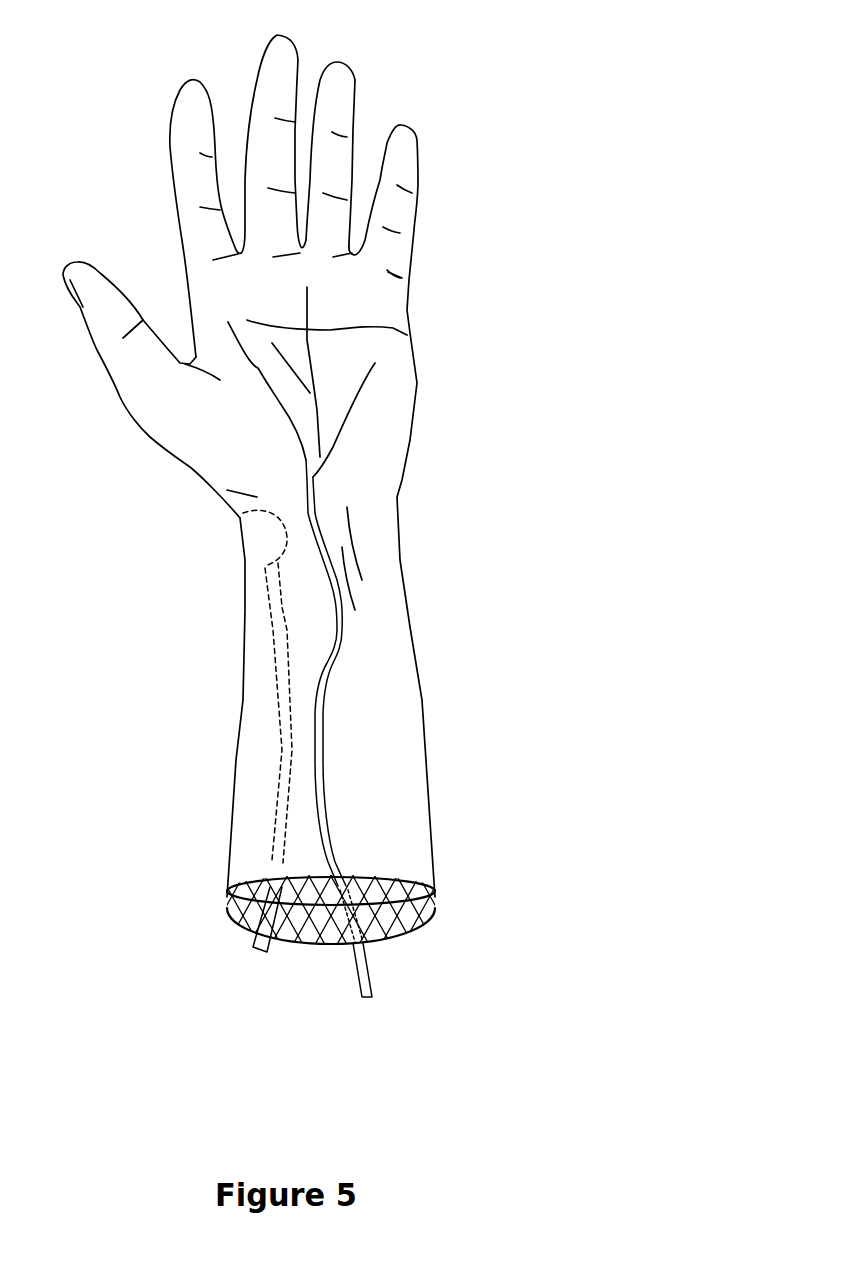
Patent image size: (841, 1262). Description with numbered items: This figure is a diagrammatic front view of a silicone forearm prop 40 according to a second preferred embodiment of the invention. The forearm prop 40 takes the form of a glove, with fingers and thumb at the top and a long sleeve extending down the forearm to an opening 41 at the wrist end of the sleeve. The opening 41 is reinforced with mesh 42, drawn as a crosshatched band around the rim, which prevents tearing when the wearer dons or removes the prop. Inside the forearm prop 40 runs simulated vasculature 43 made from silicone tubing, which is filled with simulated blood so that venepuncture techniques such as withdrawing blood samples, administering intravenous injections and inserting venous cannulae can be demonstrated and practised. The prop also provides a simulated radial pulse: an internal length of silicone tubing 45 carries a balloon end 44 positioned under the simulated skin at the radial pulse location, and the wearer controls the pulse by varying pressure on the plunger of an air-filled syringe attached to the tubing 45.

The forearm prop 40 is at (595, 738).
The opening 41 is at (369, 911).
The mesh 42 is at (437, 887).
The simulated vasculature 43 is at (308, 496).
The balloon end 44 is at (242, 533).
The silicone tubing 45 is at (263, 950).